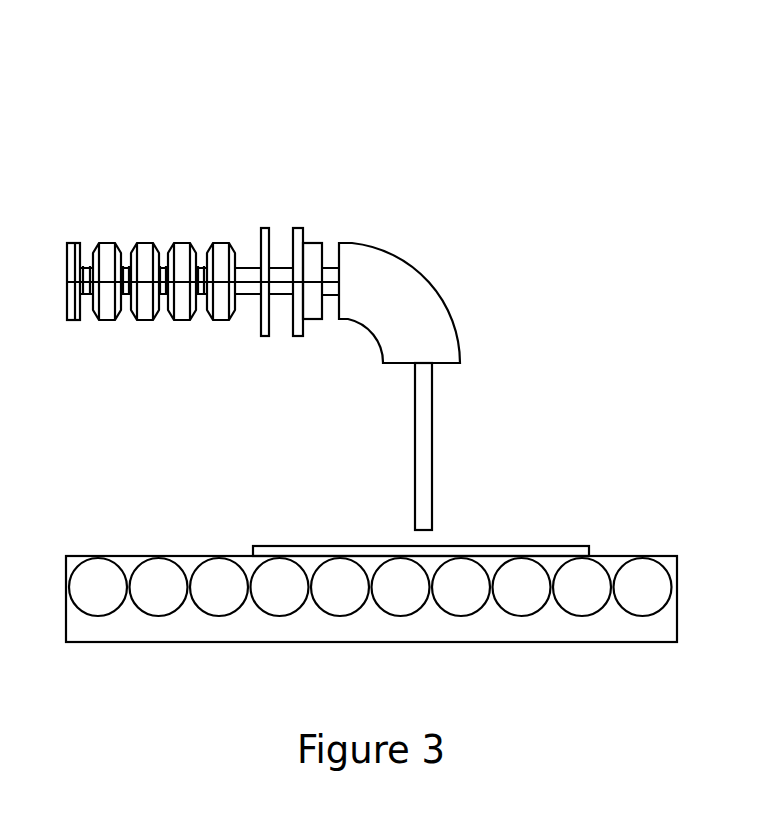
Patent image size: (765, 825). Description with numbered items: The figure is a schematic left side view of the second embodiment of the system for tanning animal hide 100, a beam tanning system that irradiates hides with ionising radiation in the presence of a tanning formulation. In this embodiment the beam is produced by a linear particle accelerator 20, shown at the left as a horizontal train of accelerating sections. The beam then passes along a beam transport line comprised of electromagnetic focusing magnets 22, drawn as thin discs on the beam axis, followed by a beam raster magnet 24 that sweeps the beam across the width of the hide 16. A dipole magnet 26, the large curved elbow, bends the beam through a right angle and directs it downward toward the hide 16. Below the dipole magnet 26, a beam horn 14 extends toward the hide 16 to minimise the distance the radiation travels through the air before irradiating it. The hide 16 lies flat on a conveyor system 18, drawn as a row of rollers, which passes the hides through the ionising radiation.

The system for tanning animal hide 100 is at (603, 113).
The beam horn 14 is at (423, 453).
The hide 16 is at (577, 545).
The conveyor system 18 is at (102, 558).
The linear particle accelerator 20 is at (103, 243).
The electromagnetic focusing magnets 22 is at (263, 235).
The beam raster magnet 24 is at (313, 315).
The dipole magnet 26 is at (400, 273).